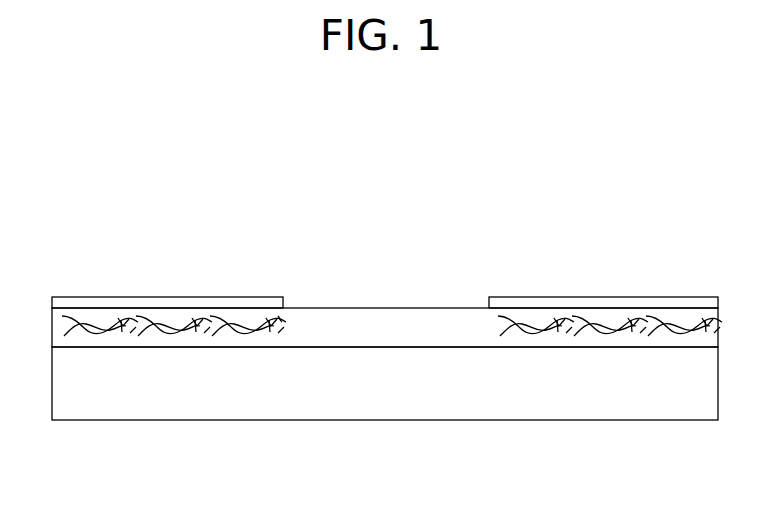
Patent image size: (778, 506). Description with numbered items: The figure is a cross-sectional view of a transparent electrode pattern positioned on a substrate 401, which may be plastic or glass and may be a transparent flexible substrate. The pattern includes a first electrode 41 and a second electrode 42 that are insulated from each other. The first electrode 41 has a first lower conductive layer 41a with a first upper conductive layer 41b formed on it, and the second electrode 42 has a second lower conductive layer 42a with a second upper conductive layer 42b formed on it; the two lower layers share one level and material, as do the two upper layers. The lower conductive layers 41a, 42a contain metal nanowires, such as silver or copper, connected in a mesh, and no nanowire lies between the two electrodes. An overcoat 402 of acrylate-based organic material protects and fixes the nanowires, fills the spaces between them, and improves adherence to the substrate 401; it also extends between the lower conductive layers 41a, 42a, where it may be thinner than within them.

The first electrode 41 is at (169, 265).
The first lower conductive layer 41a is at (93, 233).
The first upper conductive layer 41b is at (114, 302).
The second electrode 42 is at (605, 265).
The second lower conductive layer 42a is at (530, 233).
The second upper conductive layer 42b is at (551, 302).
The substrate 401 is at (271, 398).
The overcoat 402 is at (399, 332).